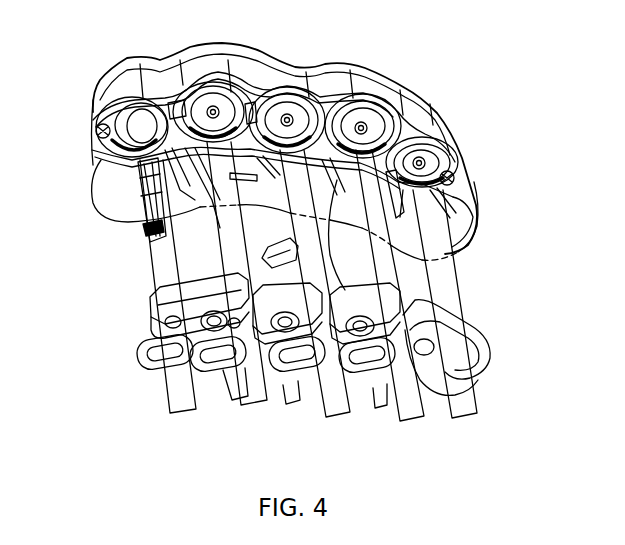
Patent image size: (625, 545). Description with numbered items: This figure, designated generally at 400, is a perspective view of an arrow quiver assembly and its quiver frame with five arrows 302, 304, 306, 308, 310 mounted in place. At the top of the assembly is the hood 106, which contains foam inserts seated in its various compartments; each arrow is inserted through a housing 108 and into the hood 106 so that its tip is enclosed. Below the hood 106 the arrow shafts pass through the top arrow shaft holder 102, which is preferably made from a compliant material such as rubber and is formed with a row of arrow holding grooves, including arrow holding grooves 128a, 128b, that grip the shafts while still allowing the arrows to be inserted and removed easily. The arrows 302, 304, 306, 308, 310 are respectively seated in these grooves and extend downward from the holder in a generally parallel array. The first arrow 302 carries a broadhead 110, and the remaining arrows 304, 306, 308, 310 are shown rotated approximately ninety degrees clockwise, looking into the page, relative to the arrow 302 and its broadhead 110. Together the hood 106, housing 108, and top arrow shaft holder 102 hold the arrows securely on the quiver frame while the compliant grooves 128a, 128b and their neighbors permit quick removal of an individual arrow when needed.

The perspective view 400 is at (465, 81).
The top arrow shaft holder 102 is at (137, 337).
The hood 106 is at (95, 91).
The housing 108 is at (102, 176).
The broadhead 110 is at (145, 253).
The arrow holding groove 128a is at (483, 381).
The arrow holding groove 128b is at (147, 313).
The arrow 302 is at (187, 404).
The arrow 304 is at (266, 398).
The arrow 306 is at (337, 411).
The arrow 308 is at (412, 416).
The arrow 310 is at (465, 412).